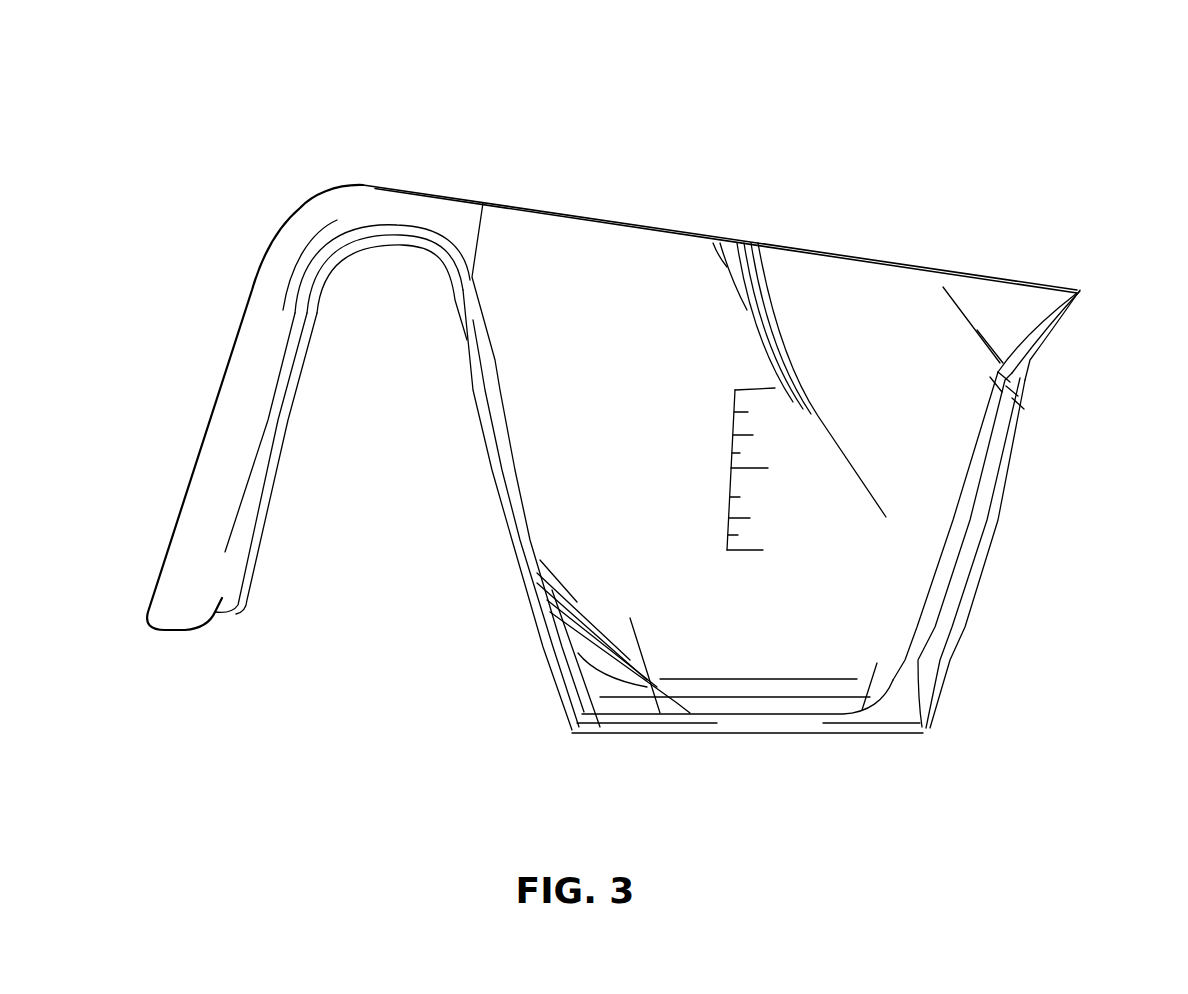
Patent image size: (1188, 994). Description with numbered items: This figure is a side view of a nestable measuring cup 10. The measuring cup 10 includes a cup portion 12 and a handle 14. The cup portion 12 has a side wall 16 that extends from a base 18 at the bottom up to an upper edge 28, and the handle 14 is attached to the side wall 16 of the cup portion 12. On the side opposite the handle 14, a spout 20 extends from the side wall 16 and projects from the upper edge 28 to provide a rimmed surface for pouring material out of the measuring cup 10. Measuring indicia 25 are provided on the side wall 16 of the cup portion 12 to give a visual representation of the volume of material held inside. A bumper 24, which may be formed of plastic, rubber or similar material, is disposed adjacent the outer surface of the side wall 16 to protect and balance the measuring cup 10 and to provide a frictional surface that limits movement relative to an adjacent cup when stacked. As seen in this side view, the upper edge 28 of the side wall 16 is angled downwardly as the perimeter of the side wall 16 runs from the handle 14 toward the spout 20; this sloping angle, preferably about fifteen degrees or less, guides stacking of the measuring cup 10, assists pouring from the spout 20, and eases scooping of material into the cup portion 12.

The measuring cup 10 is at (180, 123).
The cup portion 12 is at (657, 253).
The handle 14 is at (183, 606).
The side wall 16 is at (565, 482).
The base 18 is at (907, 695).
The spout 20 is at (1077, 290).
The bumper 24 is at (470, 237).
The measuring indicia 25 is at (735, 393).
The upper edge 28 is at (880, 258).